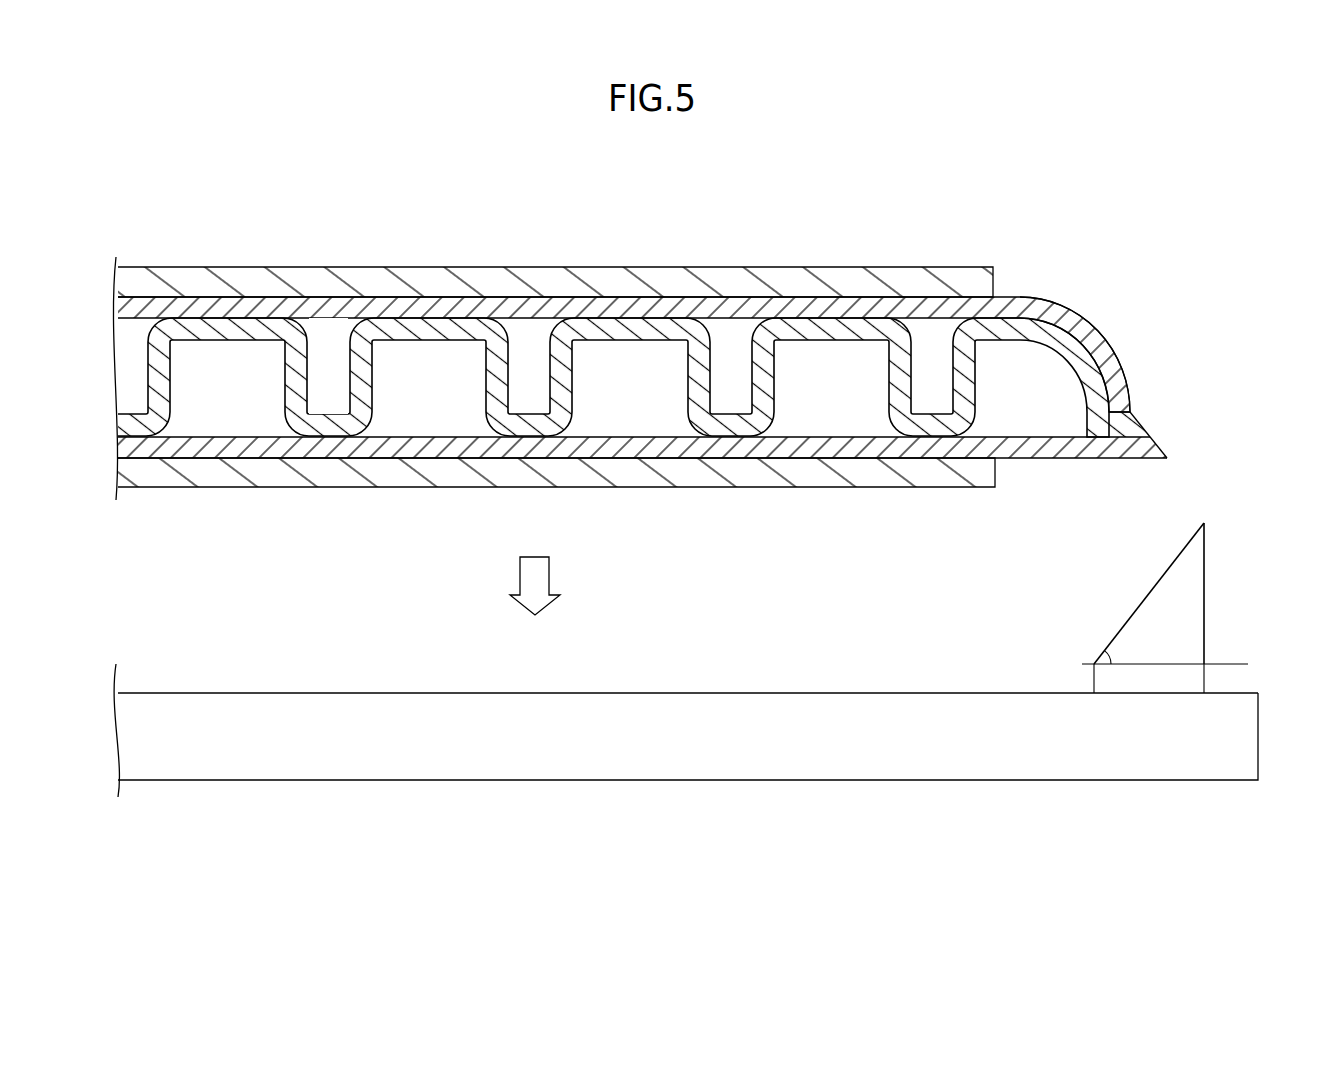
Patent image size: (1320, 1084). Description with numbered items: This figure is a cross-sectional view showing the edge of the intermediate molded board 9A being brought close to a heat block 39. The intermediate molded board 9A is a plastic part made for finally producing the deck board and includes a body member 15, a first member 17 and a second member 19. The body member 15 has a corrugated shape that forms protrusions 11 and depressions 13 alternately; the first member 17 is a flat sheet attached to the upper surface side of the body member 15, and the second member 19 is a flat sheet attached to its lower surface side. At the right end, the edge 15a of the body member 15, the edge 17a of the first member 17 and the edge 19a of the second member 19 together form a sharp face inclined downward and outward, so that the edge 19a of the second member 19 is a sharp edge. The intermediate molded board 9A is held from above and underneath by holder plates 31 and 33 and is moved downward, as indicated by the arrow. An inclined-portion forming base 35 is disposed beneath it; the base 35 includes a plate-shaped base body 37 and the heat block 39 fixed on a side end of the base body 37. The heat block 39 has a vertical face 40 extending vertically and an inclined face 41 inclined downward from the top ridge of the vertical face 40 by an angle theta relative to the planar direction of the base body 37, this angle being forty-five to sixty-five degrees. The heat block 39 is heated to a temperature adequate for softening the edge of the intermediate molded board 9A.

The intermediate molded board 9A is at (681, 390).
The protrusions 11 is at (330, 405).
The depressions 13 is at (243, 328).
The body member 15 is at (634, 461).
The edge of the body member 15a is at (1147, 425).
The first member 17 is at (446, 305).
The edge of the first member 17a is at (1123, 403).
The second member 19 is at (780, 455).
The edge of the second member 19a is at (1166, 448).
The holder plate 31 is at (600, 285).
The holder plate 33 is at (652, 488).
The inclined-portion forming base 35 is at (686, 780).
The base body 37 is at (607, 770).
The heat block 39 is at (1188, 608).
The vertical face 40 is at (1205, 625).
The inclined face 41 is at (1168, 570).